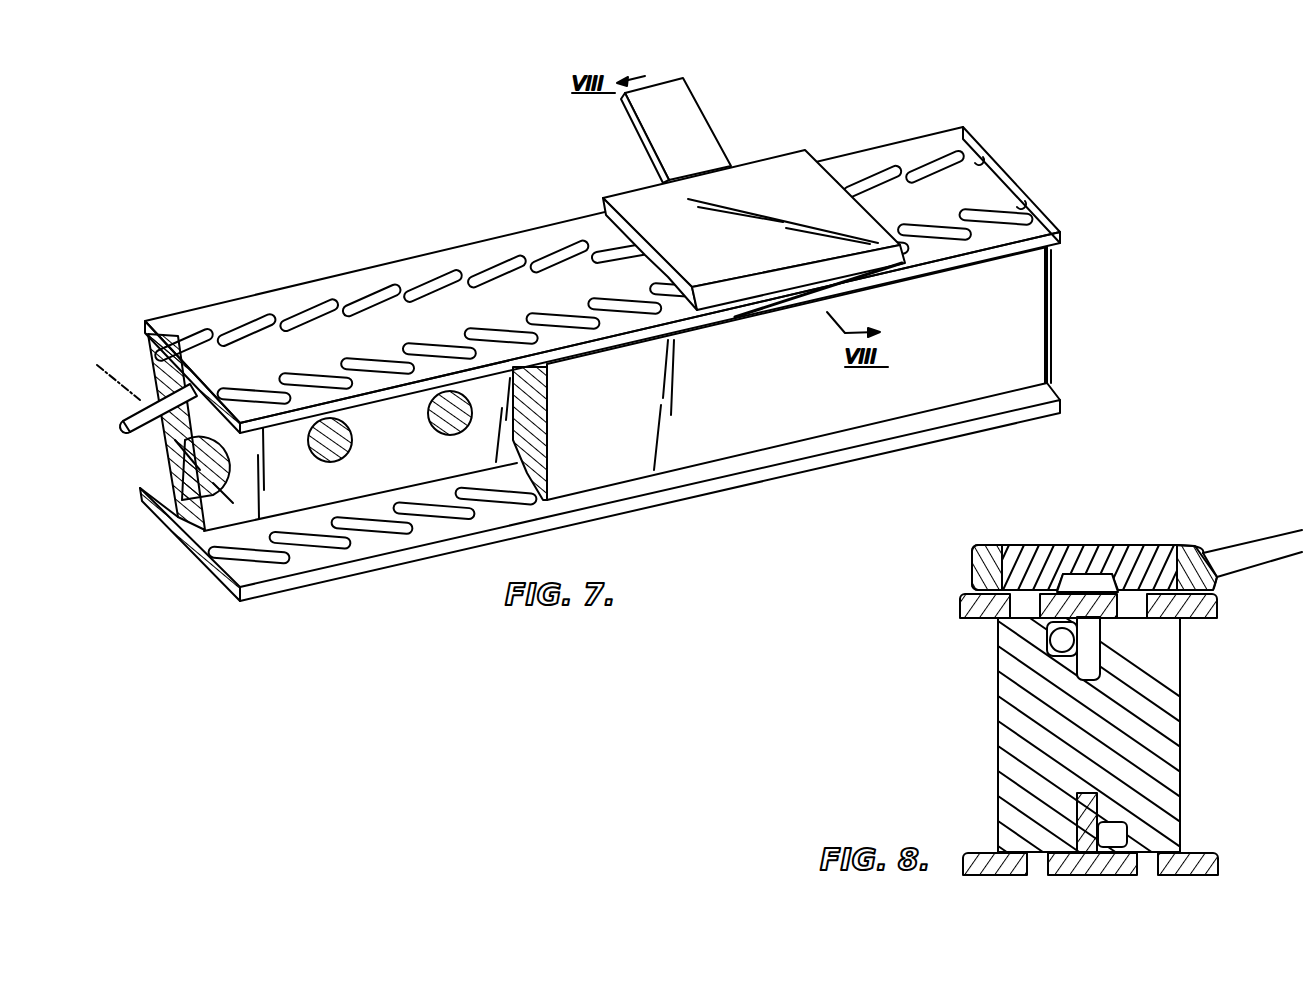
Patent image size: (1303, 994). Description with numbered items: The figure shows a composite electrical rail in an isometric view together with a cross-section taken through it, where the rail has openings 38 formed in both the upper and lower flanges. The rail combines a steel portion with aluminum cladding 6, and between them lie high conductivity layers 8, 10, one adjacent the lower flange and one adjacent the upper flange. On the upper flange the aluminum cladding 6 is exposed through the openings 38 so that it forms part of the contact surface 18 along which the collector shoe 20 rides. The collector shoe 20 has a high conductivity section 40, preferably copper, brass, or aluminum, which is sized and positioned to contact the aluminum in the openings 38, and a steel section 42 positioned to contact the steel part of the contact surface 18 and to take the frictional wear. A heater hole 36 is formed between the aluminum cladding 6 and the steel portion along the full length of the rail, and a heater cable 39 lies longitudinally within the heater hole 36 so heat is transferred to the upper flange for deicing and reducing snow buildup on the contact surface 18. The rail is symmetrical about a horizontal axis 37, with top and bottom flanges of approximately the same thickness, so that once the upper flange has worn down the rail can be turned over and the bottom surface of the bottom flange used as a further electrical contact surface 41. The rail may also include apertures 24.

In FIG. 7, the aluminum cladding 6 is at (157, 463).
In FIG. 8, the aluminum cladding 6 is at (1168, 730).
In FIG. 8, the high conductivity layer 8 is at (1073, 829).
In FIG. 8, the high conductivity layer 10 is at (1105, 646).
In FIG. 7, the contact surface 18 is at (518, 240).
In FIG. 7, the collector shoe 20 is at (705, 143).
In FIG. 8, the collector shoe 20 is at (1271, 537).
In FIG. 7, the apertures 24 is at (355, 442).
In FIG. 7, the heater hole 36 is at (543, 467).
In FIG. 8, the heater hole 36 is at (1047, 628).
In FIG. 7, the horizontal axis 37 is at (97, 365).
In FIG. 7, the openings 38 is at (246, 393).
In FIG. 8, the openings 38 is at (1120, 598).
In FIG. 7, the heater cable 39 is at (153, 387).
In FIG. 8, the heater cable 39 is at (1052, 645).
In FIG. 7, the high conductivity section 40 is at (650, 217).
In FIG. 8, the high conductivity section 40 is at (1037, 545).
In FIG. 7, the further electrical contact surface 41 is at (232, 592).
In FIG. 8, the further electrical contact surface 41 is at (992, 876).
In FIG. 8, the steel section 42 is at (982, 546).